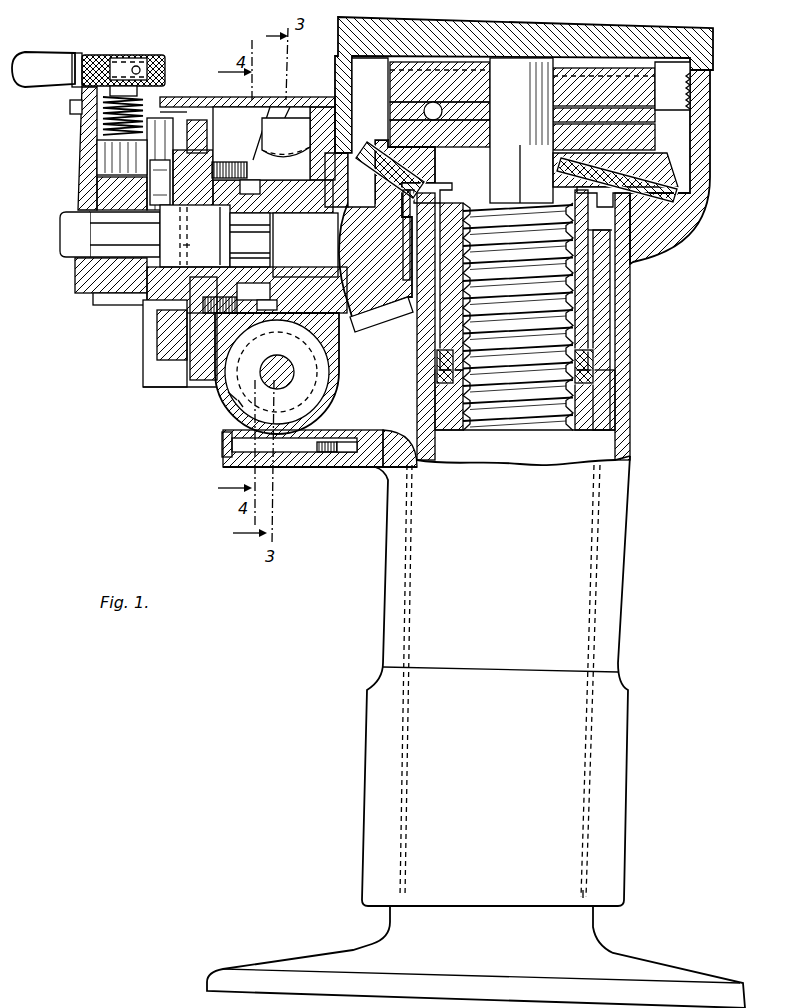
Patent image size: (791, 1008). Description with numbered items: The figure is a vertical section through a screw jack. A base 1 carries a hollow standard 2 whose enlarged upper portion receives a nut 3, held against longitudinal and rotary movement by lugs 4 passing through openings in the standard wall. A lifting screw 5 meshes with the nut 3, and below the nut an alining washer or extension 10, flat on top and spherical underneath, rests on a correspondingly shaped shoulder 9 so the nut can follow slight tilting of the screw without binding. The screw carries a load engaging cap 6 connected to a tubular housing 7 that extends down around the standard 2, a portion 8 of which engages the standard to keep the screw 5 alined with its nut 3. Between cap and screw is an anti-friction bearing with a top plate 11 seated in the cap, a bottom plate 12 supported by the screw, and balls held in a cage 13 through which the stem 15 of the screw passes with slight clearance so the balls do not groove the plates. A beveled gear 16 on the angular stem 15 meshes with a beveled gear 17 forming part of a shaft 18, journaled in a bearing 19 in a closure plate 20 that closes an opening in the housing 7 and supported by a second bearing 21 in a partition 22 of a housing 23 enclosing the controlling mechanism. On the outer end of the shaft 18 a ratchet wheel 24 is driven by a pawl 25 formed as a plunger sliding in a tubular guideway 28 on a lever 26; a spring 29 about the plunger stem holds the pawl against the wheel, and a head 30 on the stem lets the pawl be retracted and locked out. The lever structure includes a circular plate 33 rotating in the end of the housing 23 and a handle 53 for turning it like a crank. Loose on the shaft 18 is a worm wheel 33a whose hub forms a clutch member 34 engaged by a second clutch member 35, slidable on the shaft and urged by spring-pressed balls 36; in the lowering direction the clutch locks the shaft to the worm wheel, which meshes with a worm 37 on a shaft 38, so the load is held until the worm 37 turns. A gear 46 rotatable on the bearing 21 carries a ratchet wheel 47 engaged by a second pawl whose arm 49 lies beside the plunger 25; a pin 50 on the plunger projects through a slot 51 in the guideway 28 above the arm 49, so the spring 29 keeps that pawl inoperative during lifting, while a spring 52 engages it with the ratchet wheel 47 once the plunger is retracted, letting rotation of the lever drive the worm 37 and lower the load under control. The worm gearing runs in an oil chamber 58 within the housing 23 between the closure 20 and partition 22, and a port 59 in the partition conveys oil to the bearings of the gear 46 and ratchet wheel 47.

The base 1 is at (328, 952).
The standard 2 is at (585, 439).
The nut 3 is at (590, 287).
The lugs 4 is at (612, 215).
The lifting element or screw 5 is at (540, 317).
The load engaging device or cap 6 is at (712, 45).
The tubular housing 7 is at (617, 498).
The portion 8 is at (583, 898).
The shoulder 9 is at (615, 383).
The extension or alining device (washer) 10 is at (580, 356).
The top plate 11 is at (698, 92).
The bottom plate 12 is at (655, 140).
The carrier or cage 13 is at (655, 115).
The stem 15 is at (518, 132).
The beveled gear 16 is at (672, 172).
The beveled gear 17 is at (380, 325).
The shaft 18 is at (150, 292).
The bearing 19 is at (330, 276).
The closure or plate 20 is at (340, 378).
The second bearing 21 is at (150, 325).
The partition 22 is at (231, 107).
The housing 23 is at (228, 392).
The ratchet wheel 24 is at (103, 282).
The pawl 25 is at (88, 155).
The lever 26 is at (80, 108).
The tubular guideway 28 is at (97, 172).
The spring 29 is at (103, 115).
The head 30 is at (140, 62).
The circular plate 33 is at (157, 335).
The worm wheel 33a is at (290, 150).
The clutch member 34 is at (290, 214).
The second clutch member 35 is at (233, 222).
The spring-pressed balls 36 is at (253, 160).
The worm 37 is at (232, 435).
The shaft 38 is at (281, 382).
The gear 46 is at (200, 345).
The ratchet wheel 47 is at (190, 353).
The arm 49 is at (160, 170).
The pin 50 is at (138, 160).
The slot 51 is at (160, 125).
The spring 52 is at (195, 150).
The handle 53 is at (40, 55).
The chamber 58 is at (238, 400).
The port 59 is at (190, 290).